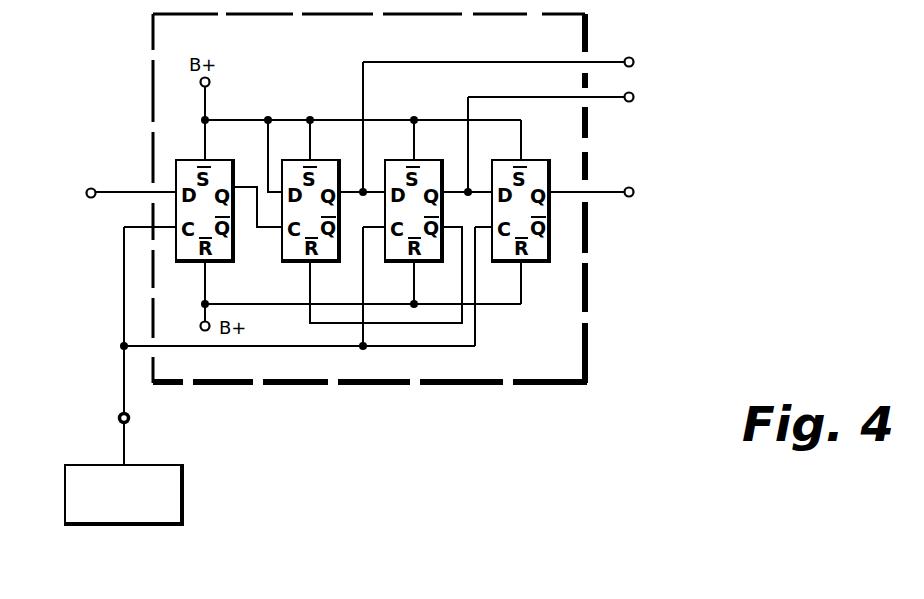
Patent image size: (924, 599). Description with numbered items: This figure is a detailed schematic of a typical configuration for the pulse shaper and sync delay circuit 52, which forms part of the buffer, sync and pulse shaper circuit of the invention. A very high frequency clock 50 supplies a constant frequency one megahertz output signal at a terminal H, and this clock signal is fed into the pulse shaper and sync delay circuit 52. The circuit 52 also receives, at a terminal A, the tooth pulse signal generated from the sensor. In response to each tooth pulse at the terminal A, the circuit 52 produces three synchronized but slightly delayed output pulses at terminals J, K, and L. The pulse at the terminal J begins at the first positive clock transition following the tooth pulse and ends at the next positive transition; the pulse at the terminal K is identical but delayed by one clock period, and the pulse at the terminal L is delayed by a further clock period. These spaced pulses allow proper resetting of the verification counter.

The very high frequency clock 50 is at (168, 465).
The pulse shaper and sync delay circuit 52 is at (588, 288).
The terminal A is at (87, 195).
The terminal H is at (111, 420).
The terminal J is at (634, 64).
The terminal K is at (634, 99).
The terminal L is at (634, 194).